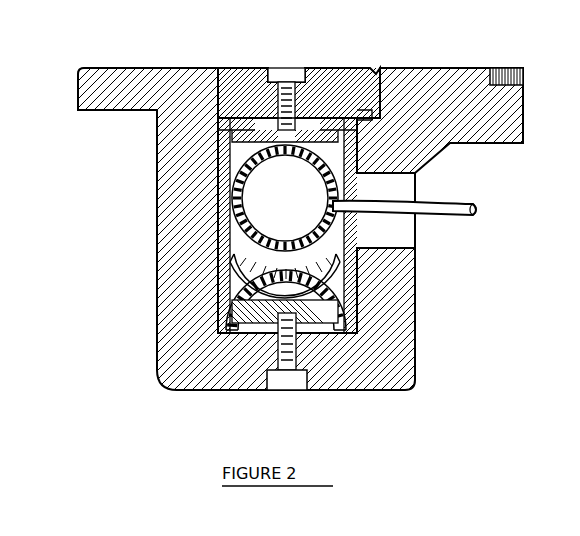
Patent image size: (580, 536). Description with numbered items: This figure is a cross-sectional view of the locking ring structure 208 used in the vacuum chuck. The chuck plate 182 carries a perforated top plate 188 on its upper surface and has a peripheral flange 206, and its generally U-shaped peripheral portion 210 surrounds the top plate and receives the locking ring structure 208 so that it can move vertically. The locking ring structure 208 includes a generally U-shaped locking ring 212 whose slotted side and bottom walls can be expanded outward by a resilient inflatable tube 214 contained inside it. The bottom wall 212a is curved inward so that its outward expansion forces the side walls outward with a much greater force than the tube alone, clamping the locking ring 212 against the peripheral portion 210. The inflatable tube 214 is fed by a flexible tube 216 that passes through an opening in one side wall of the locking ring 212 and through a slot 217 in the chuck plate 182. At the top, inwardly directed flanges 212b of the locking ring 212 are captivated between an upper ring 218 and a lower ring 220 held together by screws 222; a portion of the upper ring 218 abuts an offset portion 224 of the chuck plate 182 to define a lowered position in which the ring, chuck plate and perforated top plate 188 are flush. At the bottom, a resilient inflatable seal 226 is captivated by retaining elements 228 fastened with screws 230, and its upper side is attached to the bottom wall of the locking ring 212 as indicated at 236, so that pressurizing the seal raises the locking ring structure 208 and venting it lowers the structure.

The chuck plate 182 is at (445, 68).
The perforated top plate 188 is at (512, 68).
The peripheral flange 206 is at (106, 68).
The locking ring structure 208 is at (277, 60).
The peripheral portion 210 is at (157, 164).
The locking ring 212 is at (209, 215).
The bottom wall 212a is at (222, 272).
The inwardly directed flanges 212b is at (218, 96).
The resilient inflatable tube 214 is at (260, 170).
The flexible tube 216 is at (430, 218).
The slot 217 is at (413, 176).
The upper ring 218 is at (356, 68).
The lower ring 220 is at (232, 136).
The screws 222 is at (296, 68).
The offset portion 224 is at (368, 122).
The resilient inflatable seal 226 is at (228, 332).
The retaining elements 228 is at (348, 313).
The screws 230 is at (288, 390).
The attachment of seal to locking ring bottom wall 236 is at (270, 236).